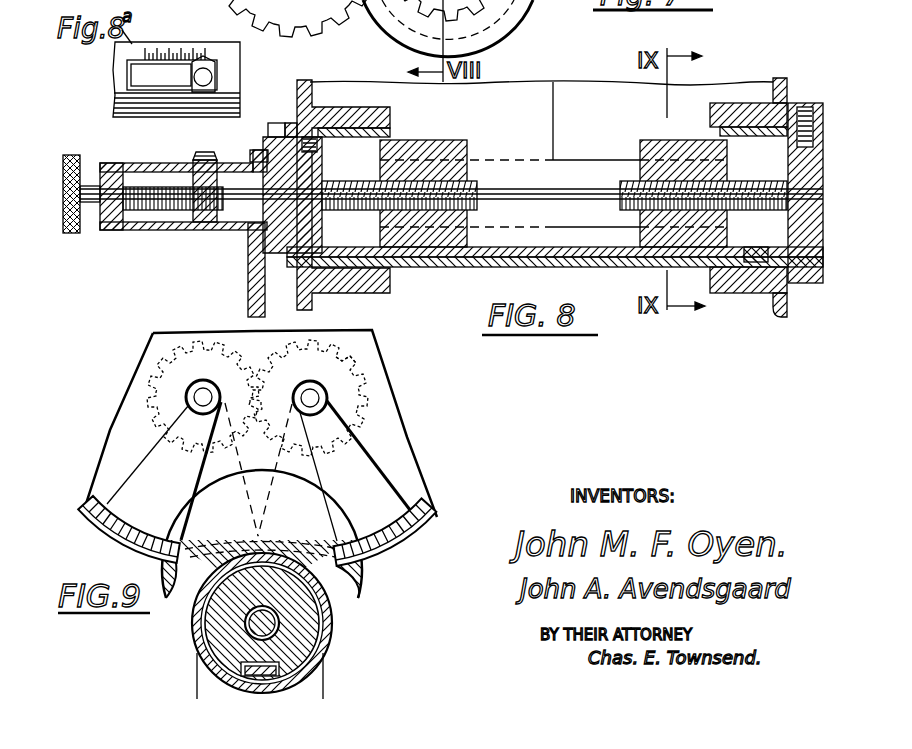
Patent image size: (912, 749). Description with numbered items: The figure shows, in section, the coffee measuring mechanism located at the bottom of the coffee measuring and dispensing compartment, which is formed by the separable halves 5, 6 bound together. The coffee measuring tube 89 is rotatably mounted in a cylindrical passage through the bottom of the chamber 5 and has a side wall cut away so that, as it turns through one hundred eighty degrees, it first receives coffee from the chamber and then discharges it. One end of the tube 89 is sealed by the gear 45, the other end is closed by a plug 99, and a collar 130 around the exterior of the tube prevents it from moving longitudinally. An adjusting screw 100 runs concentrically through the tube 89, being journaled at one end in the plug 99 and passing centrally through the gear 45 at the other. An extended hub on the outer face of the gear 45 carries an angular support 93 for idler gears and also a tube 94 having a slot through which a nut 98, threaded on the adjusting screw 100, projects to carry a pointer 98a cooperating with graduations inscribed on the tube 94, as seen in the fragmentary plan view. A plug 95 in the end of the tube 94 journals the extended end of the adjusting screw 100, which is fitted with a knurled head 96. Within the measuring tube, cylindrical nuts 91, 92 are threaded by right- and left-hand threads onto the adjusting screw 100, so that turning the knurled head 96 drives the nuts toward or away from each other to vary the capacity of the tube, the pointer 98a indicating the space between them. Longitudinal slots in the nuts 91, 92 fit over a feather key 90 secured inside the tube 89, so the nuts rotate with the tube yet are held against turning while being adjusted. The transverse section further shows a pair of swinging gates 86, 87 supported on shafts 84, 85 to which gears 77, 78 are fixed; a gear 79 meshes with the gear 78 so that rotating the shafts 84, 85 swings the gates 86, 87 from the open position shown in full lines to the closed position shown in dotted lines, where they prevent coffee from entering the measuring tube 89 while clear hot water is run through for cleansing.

In FIG. 8, the separable half 5 is at (310, 103).
In FIG. 8, the separable half 6 is at (770, 95).
In FIG. 8, the gear 45 is at (277, 128).
In FIG. 9, the gear 77 is at (177, 373).
In FIG. 9, the gear 78 is at (352, 402).
In FIG. 9, the gear 79 is at (362, 352).
In FIG. 9, the shaft 84 is at (205, 397).
In FIG. 9, the shaft 85 is at (322, 412).
In FIG. 9, the swinging gate 86 is at (157, 463).
In FIG. 9, the swinging gate 87 is at (363, 482).
In FIG. 8, the coffee measuring tube 89 is at (437, 262).
In FIG. 9, the coffee measuring tube 89 is at (322, 603).
In FIG. 8, the feather key 90 is at (474, 256).
In FIG. 9, the feather key 90 is at (235, 675).
In FIG. 8, the cylindrical nut 91 is at (422, 150).
In FIG. 8, the cylindrical nut 92 is at (648, 146).
In FIG. 9, the cylindrical nut 92 is at (297, 642).
In FIG. 8, the angular support 93 is at (248, 290).
In FIG. 8, the tube 94 is at (139, 232).
In FIG. 8, the plug 95 is at (100, 215).
In FIG. 8, the knurled head 96 is at (91, 147).
In FIG. 8, the nut 98 is at (186, 214).
In FIG. 8A, the pointer 98a is at (216, 75).
In FIG. 8, the plug 99 is at (787, 233).
In FIG. 8, the adjusting screw 100 is at (577, 193).
In FIG. 9, the adjusting screw 100 is at (245, 624).
In FIG. 8, the collar 130 is at (803, 284).